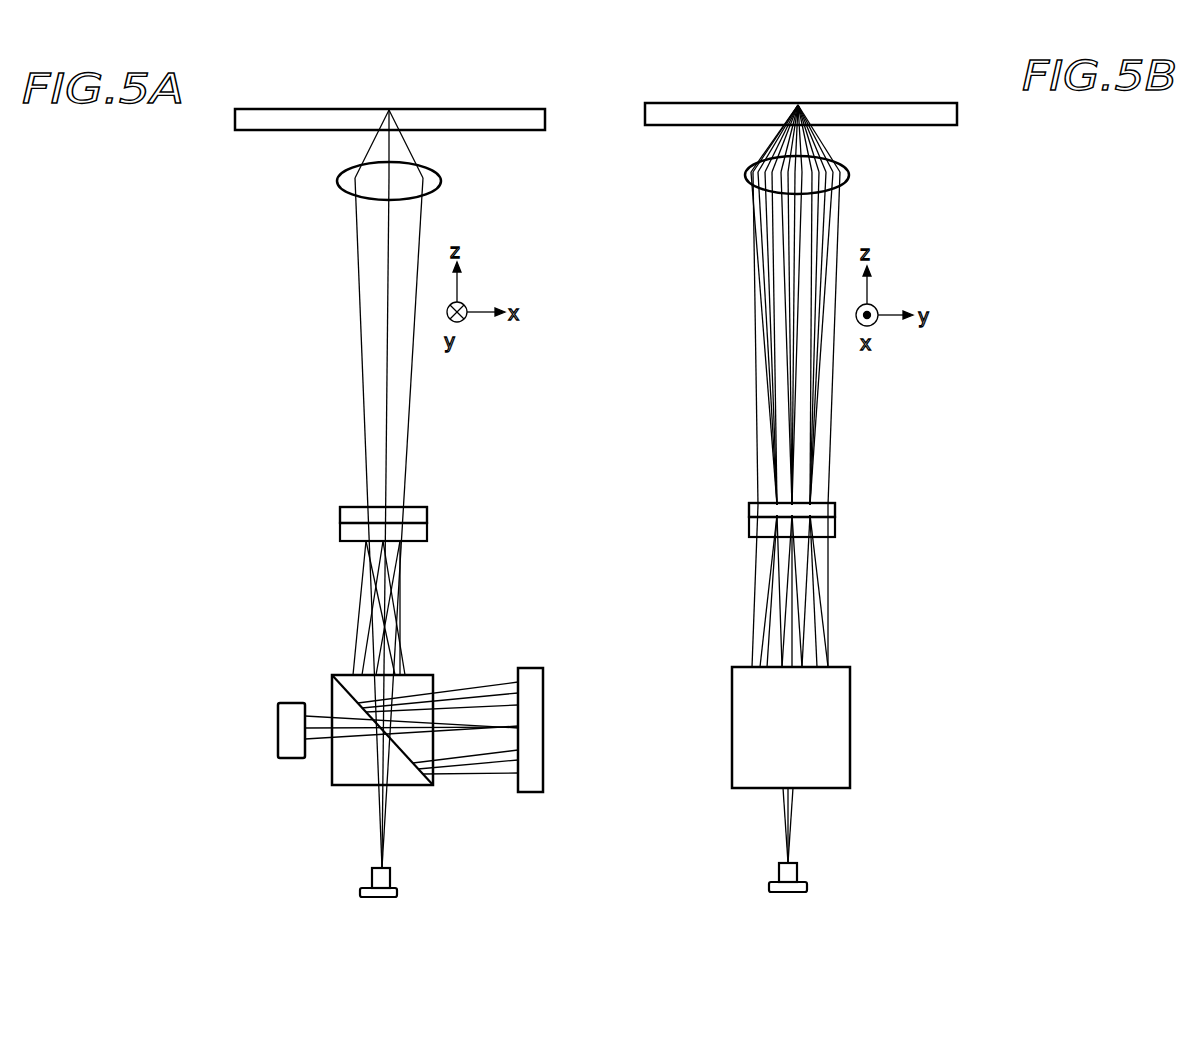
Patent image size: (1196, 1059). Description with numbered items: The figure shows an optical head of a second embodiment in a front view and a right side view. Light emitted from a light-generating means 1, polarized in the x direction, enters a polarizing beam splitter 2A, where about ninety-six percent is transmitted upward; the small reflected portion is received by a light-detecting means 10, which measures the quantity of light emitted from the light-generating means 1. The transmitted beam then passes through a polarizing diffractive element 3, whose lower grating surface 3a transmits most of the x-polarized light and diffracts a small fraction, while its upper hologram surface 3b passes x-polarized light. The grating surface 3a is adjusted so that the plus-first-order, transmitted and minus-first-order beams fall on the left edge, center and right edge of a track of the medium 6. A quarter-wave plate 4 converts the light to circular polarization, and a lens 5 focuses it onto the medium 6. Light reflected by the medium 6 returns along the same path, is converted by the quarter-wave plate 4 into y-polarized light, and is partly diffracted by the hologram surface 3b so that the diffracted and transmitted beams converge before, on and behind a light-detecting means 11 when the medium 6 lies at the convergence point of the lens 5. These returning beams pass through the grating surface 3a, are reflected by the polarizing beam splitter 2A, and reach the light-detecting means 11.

In FIG. 5A, the light-generating means 1 is at (392, 878).
In FIG. 5B, the light-generating means 1 is at (777, 876).
In FIG. 5A, the polarizing beam splitter 2A is at (432, 675).
In FIG. 5A, the polarizing diffractive element 3 is at (474, 454).
In FIG. 5B, the polarizing diffractive element 3 is at (823, 492).
In FIG. 5A, the grating surface 3a is at (357, 541).
In FIG. 5B, the grating surface 3a is at (859, 557).
In FIG. 5A, the hologram surface 3b is at (342, 508).
In FIG. 5B, the hologram surface 3b is at (833, 511).
In FIG. 5A, the quarter-wave plate 4 is at (424, 506).
In FIG. 5B, the quarter-wave plate 4 is at (750, 504).
In FIG. 5A, the lens 5 is at (442, 183).
In FIG. 5B, the lens 5 is at (746, 179).
In FIG. 5A, the medium 6 is at (472, 108).
In FIG. 5B, the medium 6 is at (737, 103).
In FIG. 5A, the light-detecting means 10 is at (280, 745).
In FIG. 5A, the light-detecting means 11 is at (543, 711).
In FIG. 5B, the light-detecting means 11 is at (732, 716).